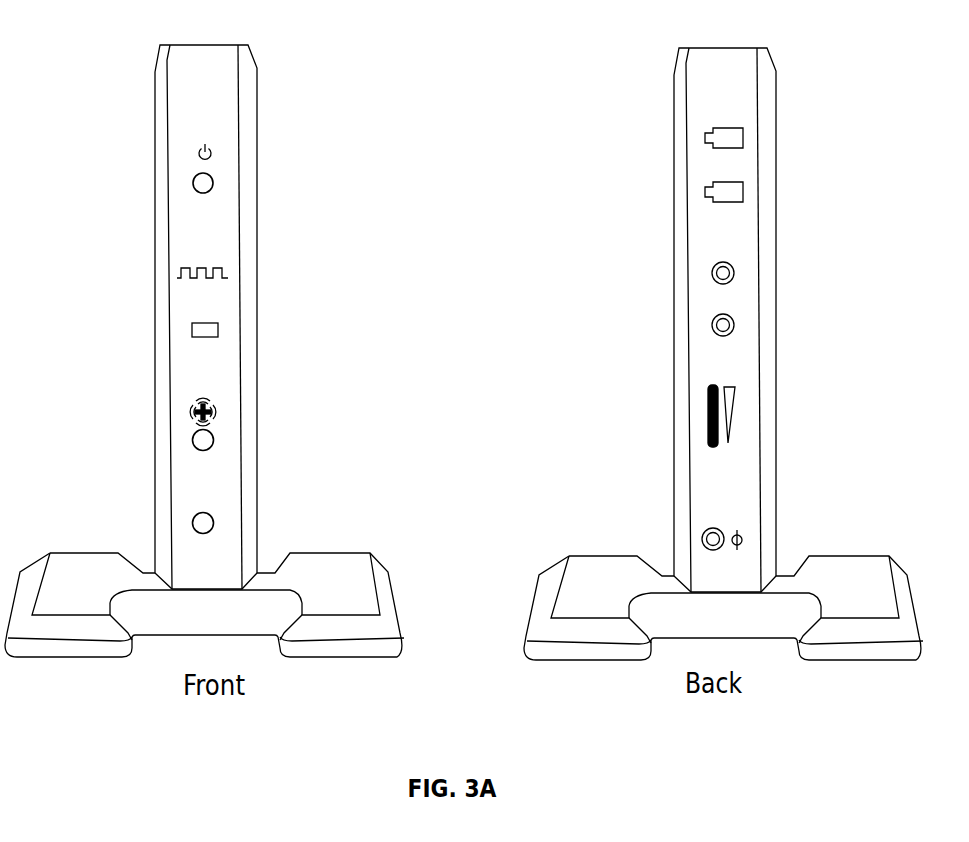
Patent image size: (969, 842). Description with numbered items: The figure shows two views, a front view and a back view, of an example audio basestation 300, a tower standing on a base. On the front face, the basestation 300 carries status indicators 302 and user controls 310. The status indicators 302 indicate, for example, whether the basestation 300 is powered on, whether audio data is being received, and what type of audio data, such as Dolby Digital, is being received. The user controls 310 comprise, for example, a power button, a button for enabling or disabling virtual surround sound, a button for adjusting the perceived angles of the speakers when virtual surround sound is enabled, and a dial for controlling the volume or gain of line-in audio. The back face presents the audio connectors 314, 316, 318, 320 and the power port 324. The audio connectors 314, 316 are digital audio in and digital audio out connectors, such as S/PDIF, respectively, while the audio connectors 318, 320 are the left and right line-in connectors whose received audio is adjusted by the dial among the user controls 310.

The audio basestation 300 is at (95, 175).
The status indicators 302 is at (200, 150).
The user controls 310 is at (200, 193).
The audio connector 314 is at (728, 128).
The audio connector 316 is at (728, 182).
The audio connector 318 is at (722, 262).
The audio connector 320 is at (722, 314).
The power port 324 is at (713, 528).